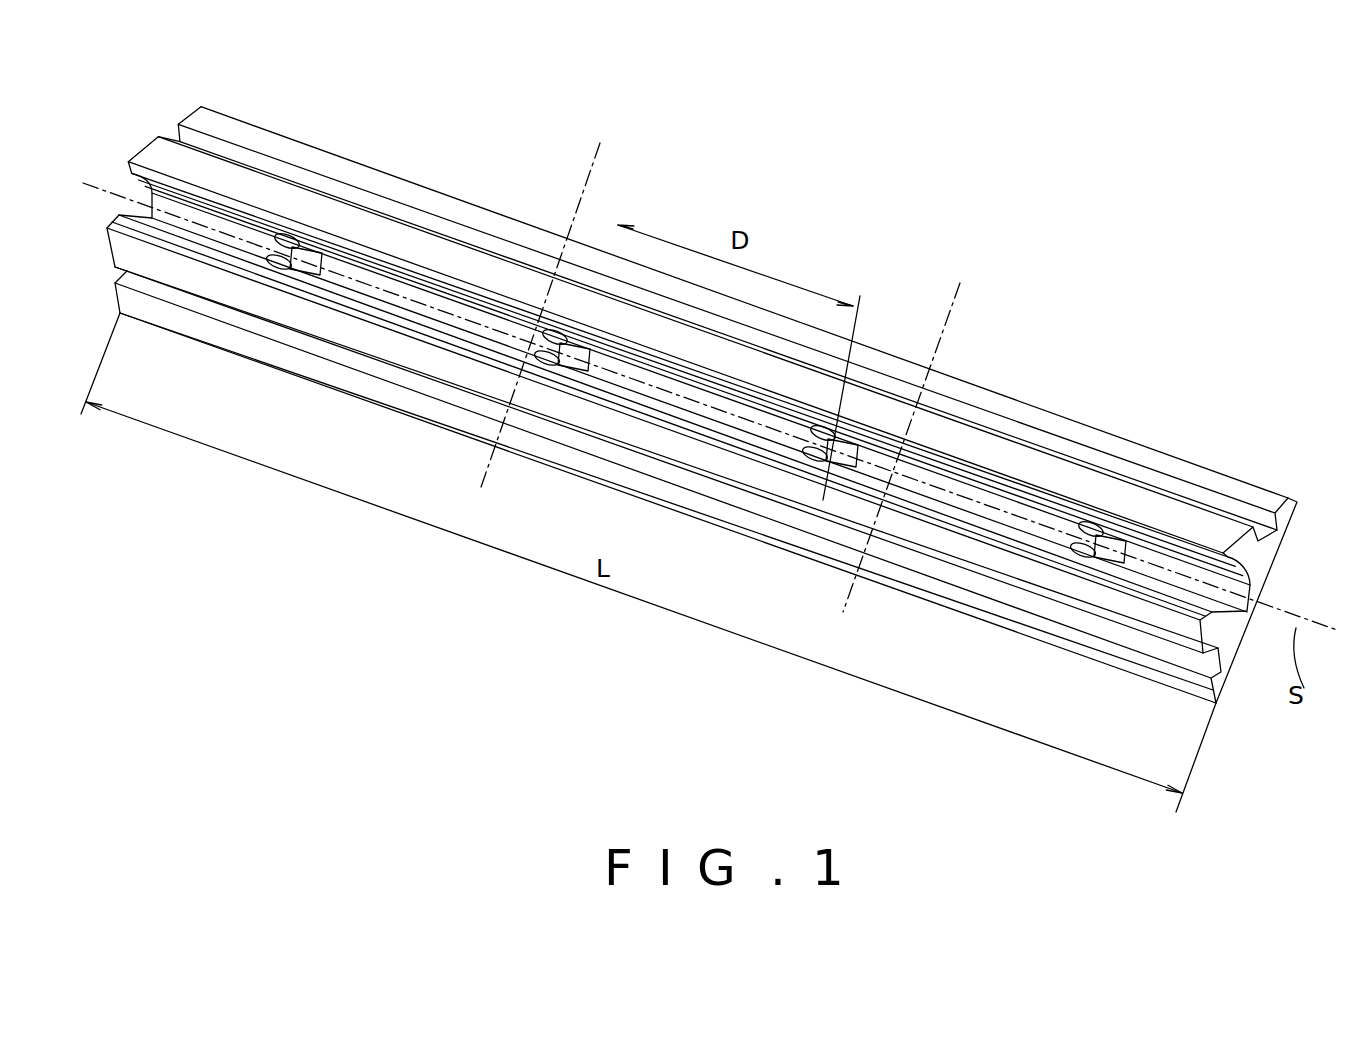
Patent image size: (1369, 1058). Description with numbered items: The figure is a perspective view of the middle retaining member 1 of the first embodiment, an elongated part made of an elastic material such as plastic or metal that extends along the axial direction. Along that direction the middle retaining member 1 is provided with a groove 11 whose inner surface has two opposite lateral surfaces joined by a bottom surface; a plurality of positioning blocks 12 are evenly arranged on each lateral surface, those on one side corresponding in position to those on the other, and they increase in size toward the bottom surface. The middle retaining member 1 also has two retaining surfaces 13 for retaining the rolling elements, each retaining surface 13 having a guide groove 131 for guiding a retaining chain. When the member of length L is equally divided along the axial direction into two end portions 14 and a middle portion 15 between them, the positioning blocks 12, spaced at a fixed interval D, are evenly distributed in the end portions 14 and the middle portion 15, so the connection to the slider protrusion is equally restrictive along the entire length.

The middle retaining member 1 is at (733, 426).
The groove 11 is at (979, 490).
The positioning blocks 12 is at (289, 233).
The retaining surfaces 13 is at (1232, 491).
The guide groove 131 is at (1250, 520).
The end portions 14 is at (733, 309).
The middle portion 15 is at (866, 344).